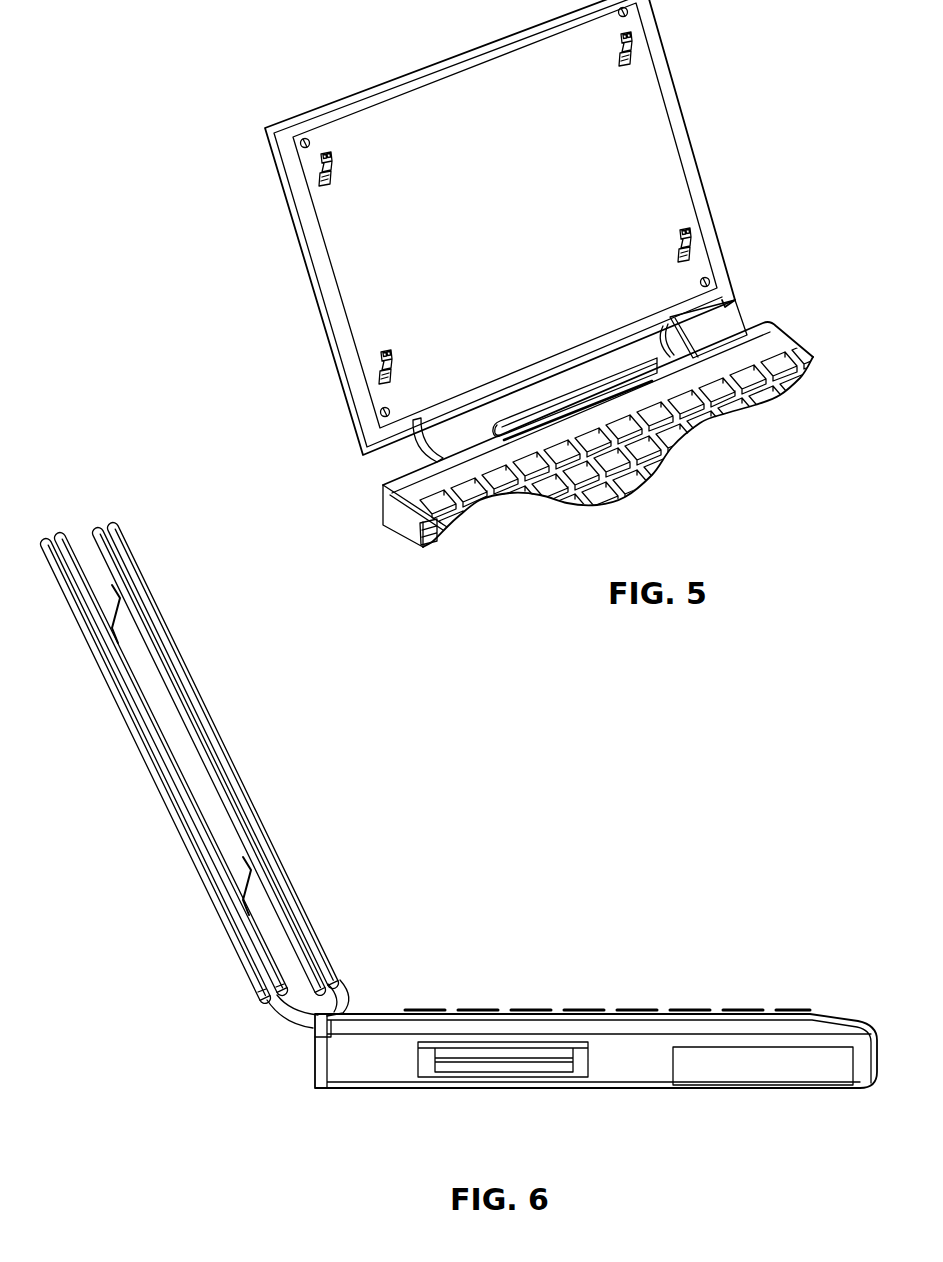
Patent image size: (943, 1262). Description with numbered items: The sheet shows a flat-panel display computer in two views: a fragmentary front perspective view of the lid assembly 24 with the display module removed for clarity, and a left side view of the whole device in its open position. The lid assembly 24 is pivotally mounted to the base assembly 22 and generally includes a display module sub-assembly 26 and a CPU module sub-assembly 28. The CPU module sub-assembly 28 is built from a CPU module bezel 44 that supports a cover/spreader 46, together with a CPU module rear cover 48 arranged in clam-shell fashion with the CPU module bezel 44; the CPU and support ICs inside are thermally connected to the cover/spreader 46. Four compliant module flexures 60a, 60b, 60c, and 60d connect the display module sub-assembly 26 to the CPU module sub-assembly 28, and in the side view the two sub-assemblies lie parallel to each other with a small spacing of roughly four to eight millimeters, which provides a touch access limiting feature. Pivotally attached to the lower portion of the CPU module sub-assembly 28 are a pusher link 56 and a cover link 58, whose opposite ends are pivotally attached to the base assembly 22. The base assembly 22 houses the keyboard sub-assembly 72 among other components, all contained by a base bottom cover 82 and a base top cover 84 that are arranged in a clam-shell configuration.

In FIG. 5, the base assembly 22 is at (796, 331).
In FIG. 6, the base assembly 22 is at (596, 1040).
In FIG. 6, the lid assembly 24 is at (212, 758).
In FIG. 6, the display module sub-assembly 26 is at (264, 804).
In FIG. 5, the CPU module sub-assembly 28 is at (696, 144).
In FIG. 6, the CPU module sub-assembly 28 is at (188, 867).
In FIG. 5, the CPU module bezel 44 is at (717, 255).
In FIG. 5, the cover/spreader 46 is at (642, 82).
In FIG. 6, the CPU module rear cover 48 is at (230, 929).
In FIG. 5, the pusher link 56 is at (437, 462).
In FIG. 6, the pusher link 56 is at (315, 1024).
In FIG. 5, the cover link 58 is at (722, 323).
In FIG. 5, the compliant module flexure 60a is at (635, 47).
In FIG. 5, the compliant module flexure 60b is at (695, 240).
In FIG. 5, the compliant module flexure 60c is at (322, 173).
In FIG. 6, the compliant module flexure 60c is at (115, 618).
In FIG. 5, the compliant module flexure 60d is at (380, 368).
In FIG. 6, the compliant module flexure 60d is at (250, 886).
In FIG. 6, the keyboard sub-assembly 72 is at (628, 1005).
In FIG. 6, the base bottom cover 82 is at (370, 1070).
In FIG. 6, the base top cover 84 is at (772, 1028).